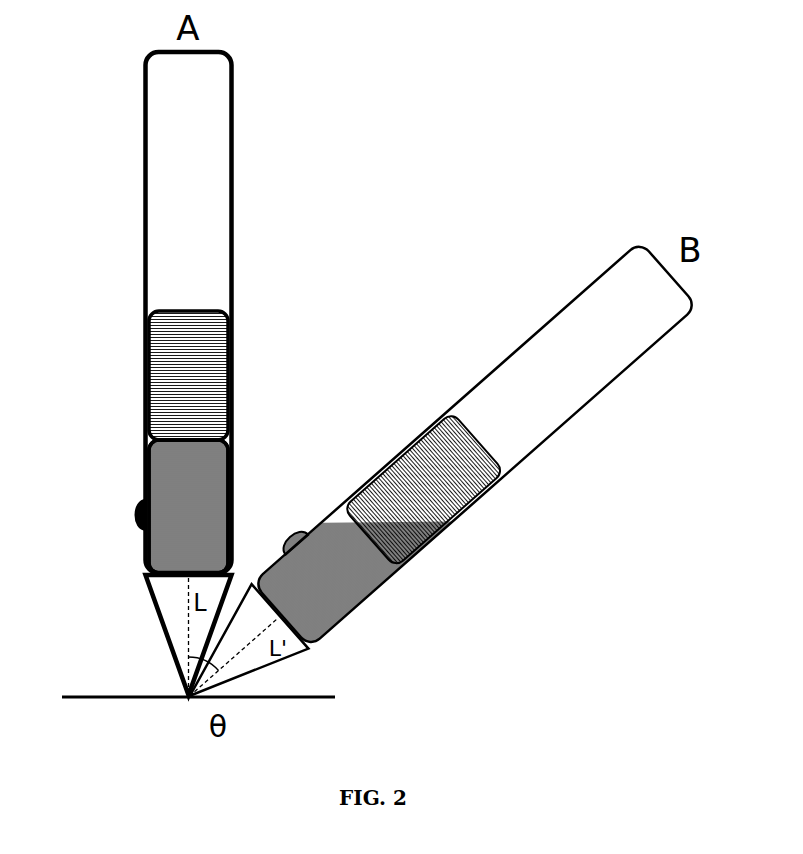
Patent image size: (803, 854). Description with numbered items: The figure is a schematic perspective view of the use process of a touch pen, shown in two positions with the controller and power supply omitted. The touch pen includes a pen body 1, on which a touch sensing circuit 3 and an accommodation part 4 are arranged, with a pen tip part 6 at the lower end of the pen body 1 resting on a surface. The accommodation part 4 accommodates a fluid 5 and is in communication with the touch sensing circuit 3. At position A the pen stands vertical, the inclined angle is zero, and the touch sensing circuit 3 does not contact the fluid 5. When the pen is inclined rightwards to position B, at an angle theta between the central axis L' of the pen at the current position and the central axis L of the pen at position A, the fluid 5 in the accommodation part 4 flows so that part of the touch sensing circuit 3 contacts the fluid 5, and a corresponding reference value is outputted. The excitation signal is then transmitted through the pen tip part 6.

The pen body 1 is at (233, 230).
The touch sensing circuit 3 is at (183, 308).
The accommodation part 4 is at (145, 470).
The fluid 5 is at (165, 492).
The pen tip part 6 is at (160, 628).